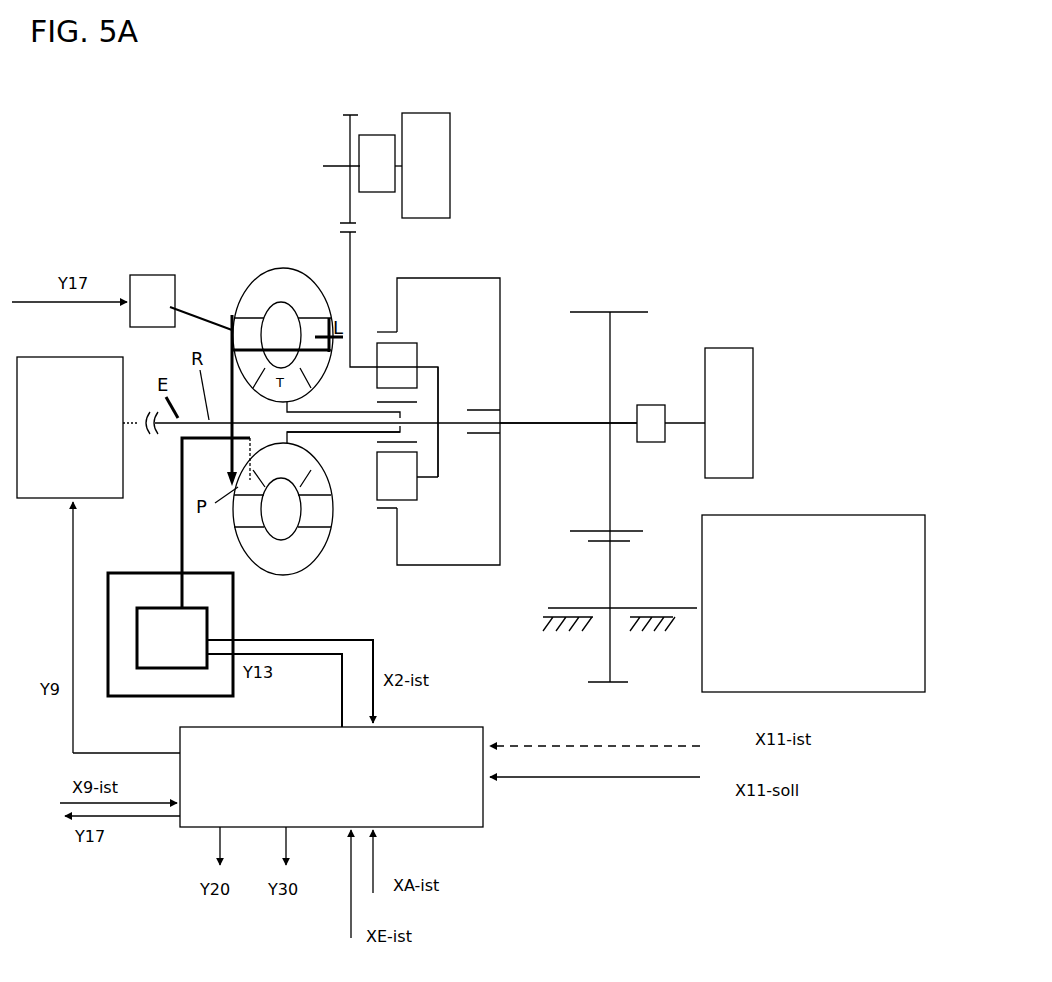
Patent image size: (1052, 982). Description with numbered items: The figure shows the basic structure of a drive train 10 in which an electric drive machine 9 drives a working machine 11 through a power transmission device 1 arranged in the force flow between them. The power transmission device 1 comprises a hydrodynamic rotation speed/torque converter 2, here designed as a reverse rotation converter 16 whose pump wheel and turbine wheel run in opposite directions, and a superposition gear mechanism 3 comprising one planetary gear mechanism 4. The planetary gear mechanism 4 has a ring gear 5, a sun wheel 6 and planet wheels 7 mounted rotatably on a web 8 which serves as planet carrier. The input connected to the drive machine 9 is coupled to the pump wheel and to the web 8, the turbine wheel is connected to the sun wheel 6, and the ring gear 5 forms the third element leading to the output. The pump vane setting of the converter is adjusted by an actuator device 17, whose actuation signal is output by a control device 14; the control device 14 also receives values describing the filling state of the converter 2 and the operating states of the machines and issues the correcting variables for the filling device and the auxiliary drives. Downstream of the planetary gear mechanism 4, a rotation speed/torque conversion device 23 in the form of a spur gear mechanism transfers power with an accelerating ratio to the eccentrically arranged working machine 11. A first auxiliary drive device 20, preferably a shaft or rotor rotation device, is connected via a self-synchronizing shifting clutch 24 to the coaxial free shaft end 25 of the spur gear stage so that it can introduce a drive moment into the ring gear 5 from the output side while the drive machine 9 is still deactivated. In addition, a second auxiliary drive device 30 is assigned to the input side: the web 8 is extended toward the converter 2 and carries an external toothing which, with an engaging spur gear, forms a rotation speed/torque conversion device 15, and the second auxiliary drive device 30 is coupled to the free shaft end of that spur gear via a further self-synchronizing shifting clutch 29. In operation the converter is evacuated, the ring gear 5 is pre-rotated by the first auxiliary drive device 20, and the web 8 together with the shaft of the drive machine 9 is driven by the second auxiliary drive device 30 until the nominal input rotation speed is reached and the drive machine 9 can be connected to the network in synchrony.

The power transmission device 1 is at (188, 272).
The hydrodynamic rotation speed/torque converter 2 is at (316, 380).
The reverse rotation converter 16 is at (316, 500).
The superposition gear mechanism 3 is at (462, 250).
The planetary gear mechanism 4 is at (411, 326).
The ring gear 5 is at (385, 332).
The sun wheel 6 is at (372, 436).
The planet wheels 7 is at (405, 490).
The web 8 is at (438, 372).
The drive machine 9 is at (70, 427).
The drive train 10 is at (563, 167).
The working machine 11 is at (840, 545).
The control device 14 is at (331, 777).
The rotation speed/torque conversion device 15 is at (350, 107).
The actuator device 17 is at (181, 302).
The first auxiliary drive device 20 is at (724, 368).
The rotation speed/torque conversion device 23 is at (607, 298).
The self-synchronizing shifting clutch 24 is at (645, 418).
The free shaft end 25 is at (620, 428).
The self-synchronizing shifting clutch 29 is at (370, 150).
The second auxiliary drive device 30 is at (455, 117).